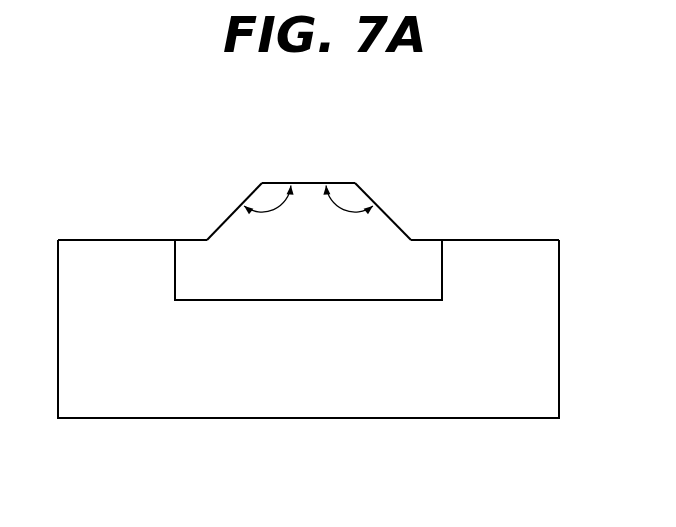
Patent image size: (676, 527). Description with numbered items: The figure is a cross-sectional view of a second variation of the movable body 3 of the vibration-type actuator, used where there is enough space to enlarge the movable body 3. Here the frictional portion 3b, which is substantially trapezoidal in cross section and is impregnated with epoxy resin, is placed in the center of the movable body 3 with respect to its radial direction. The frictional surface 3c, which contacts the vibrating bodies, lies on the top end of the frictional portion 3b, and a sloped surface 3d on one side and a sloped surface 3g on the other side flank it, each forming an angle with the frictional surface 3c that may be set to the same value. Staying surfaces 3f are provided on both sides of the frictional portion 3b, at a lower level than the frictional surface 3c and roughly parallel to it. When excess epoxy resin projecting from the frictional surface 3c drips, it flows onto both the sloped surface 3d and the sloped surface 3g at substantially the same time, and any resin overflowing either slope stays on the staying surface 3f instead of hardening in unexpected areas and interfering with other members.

The movable body 3 is at (380, 135).
The frictional portion 3b is at (295, 277).
The frictional surface 3c is at (307, 183).
The sloped surface 3d is at (390, 218).
The staying surface 3f is at (108, 240).
The sloped surface 3g is at (232, 215).